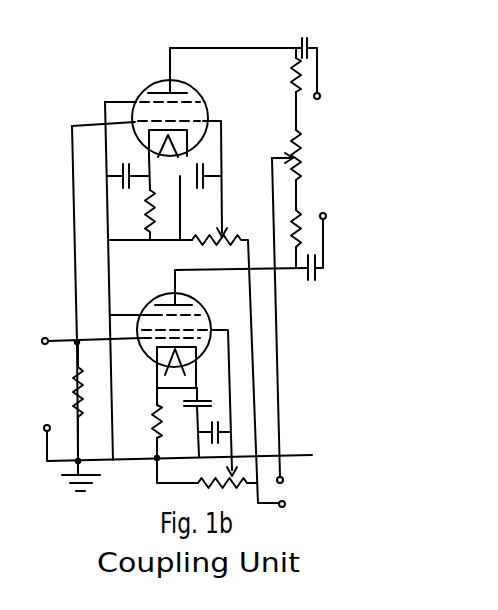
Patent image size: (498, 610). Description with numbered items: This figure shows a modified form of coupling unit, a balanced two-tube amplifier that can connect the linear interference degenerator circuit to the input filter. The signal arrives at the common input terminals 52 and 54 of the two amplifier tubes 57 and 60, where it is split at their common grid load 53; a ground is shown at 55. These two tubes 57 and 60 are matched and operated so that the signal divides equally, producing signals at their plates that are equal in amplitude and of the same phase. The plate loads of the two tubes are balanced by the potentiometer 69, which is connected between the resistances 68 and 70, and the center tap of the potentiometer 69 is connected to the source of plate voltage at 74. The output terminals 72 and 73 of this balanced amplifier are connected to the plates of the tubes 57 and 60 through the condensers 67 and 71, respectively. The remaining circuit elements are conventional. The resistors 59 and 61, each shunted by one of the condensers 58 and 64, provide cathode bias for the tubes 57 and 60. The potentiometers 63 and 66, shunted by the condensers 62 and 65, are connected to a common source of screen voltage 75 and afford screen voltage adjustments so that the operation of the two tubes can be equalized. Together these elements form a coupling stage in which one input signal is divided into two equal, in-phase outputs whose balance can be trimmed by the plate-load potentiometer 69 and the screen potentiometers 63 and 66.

The input terminal 52 is at (43, 343).
The common grid load 53 is at (74, 381).
The input terminal 54 is at (47, 431).
The ground 55 is at (71, 480).
The amplifier tube 57 is at (144, 86).
The condenser 58 is at (125, 164).
The resistor 59 is at (141, 209).
The amplifier tube 60 is at (152, 297).
The resistor 61 is at (152, 427).
The condenser 62 is at (198, 189).
The potentiometer 63 is at (197, 244).
The condenser 64 is at (182, 406).
The condenser 65 is at (205, 437).
The potentiometer 66 is at (201, 478).
The condenser 67 is at (298, 44).
The resistance 68 is at (289, 83).
The potentiometer 69 is at (292, 148).
The resistance 70 is at (286, 222).
The condenser 71 is at (304, 273).
The output terminal 72 is at (315, 99).
The output terminal 73 is at (322, 214).
The source of plate voltage 74 is at (283, 478).
The common source of screen voltage 75 is at (285, 503).